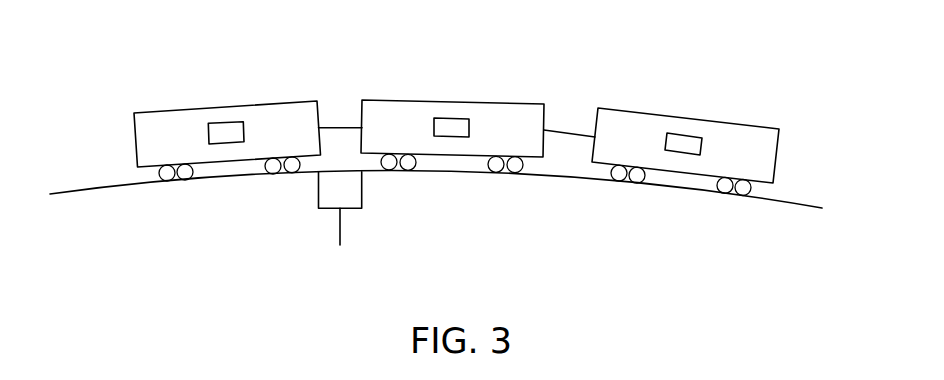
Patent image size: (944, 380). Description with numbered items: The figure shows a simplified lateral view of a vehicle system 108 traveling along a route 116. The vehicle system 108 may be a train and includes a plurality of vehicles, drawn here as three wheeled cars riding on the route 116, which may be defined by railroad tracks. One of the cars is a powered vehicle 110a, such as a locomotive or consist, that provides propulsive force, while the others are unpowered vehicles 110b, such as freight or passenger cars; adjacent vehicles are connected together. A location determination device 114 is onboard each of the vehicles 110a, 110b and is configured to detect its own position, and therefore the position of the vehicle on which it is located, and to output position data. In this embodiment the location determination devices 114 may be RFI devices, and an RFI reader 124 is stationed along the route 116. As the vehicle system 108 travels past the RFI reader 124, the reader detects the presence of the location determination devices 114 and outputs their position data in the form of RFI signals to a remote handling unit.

The vehicle system 108 is at (162, 78).
The powered vehicle 110a is at (748, 120).
The unpowered vehicle 110b is at (285, 101).
The location determination device 114 is at (224, 123).
The route 116 is at (788, 207).
The RFI reader 124 is at (337, 226).